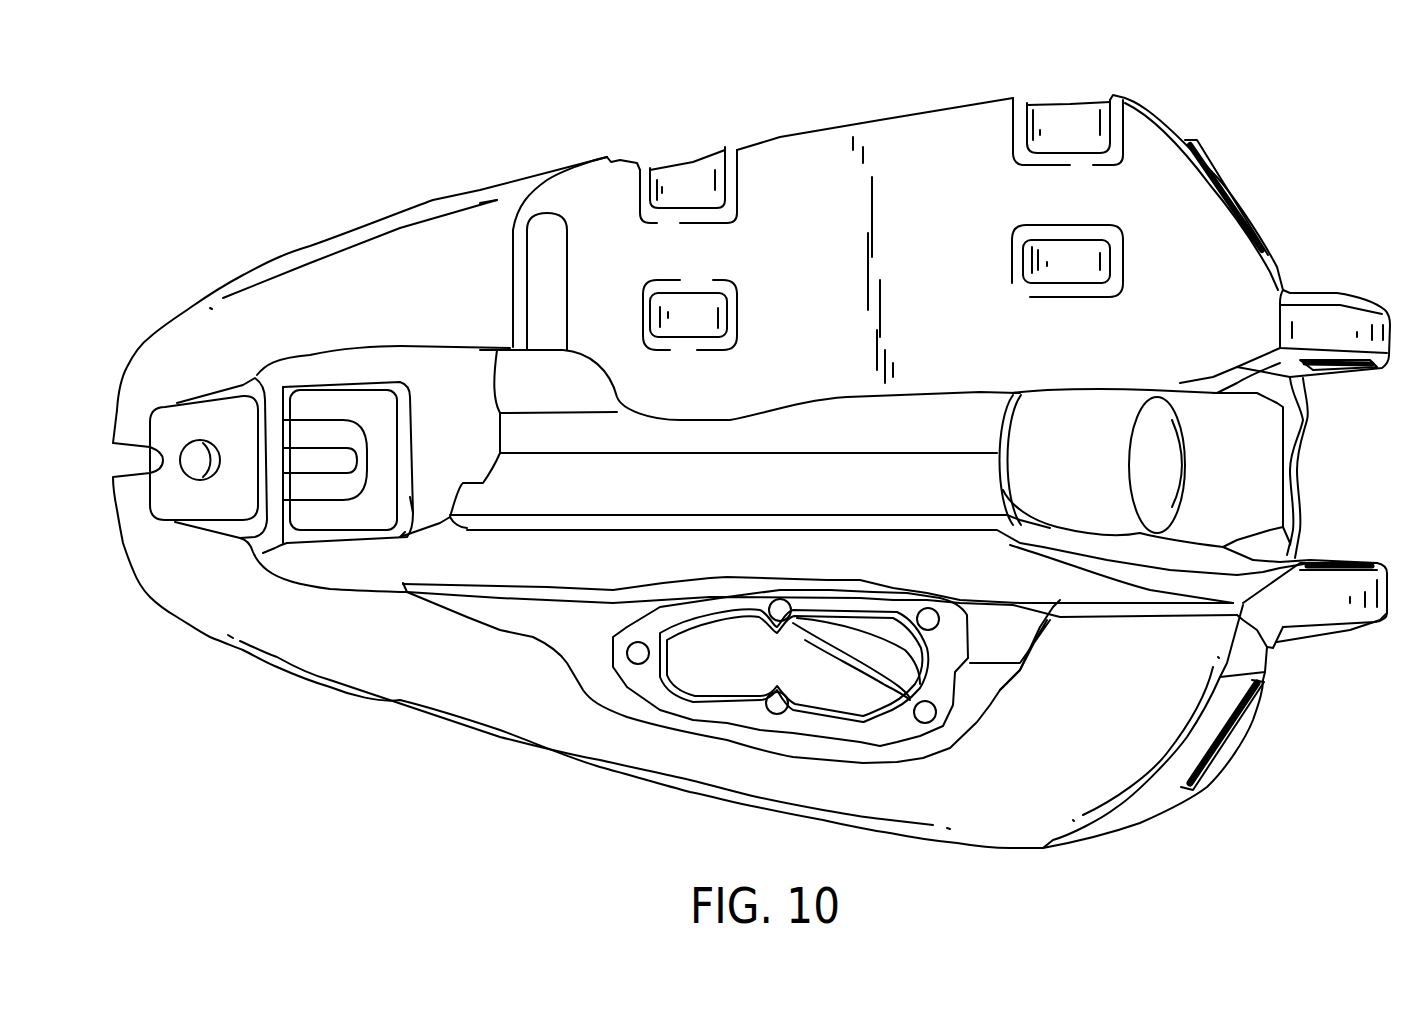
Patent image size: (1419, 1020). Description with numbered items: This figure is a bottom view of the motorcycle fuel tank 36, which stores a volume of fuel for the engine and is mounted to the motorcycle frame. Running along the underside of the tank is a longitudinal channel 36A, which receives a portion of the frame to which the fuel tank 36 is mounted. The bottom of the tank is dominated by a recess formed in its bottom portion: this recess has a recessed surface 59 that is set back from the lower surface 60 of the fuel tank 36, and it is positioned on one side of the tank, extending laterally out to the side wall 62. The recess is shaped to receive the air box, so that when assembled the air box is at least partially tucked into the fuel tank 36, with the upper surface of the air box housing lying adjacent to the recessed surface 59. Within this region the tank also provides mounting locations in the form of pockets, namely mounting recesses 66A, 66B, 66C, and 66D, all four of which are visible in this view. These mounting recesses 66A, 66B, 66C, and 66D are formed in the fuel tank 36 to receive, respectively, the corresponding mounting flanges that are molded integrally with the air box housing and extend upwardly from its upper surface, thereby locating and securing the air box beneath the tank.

The fuel tank 36 is at (359, 205).
The longitudinal channel 36A is at (563, 500).
The recessed surface 59 is at (853, 279).
The lower surface 60 is at (384, 318).
The side wall 62 is at (911, 96).
The mounting recess 66A is at (695, 178).
The mounting recess 66B is at (1073, 125).
The mounting recess 66C is at (695, 310).
The mounting recess 66D is at (1068, 255).